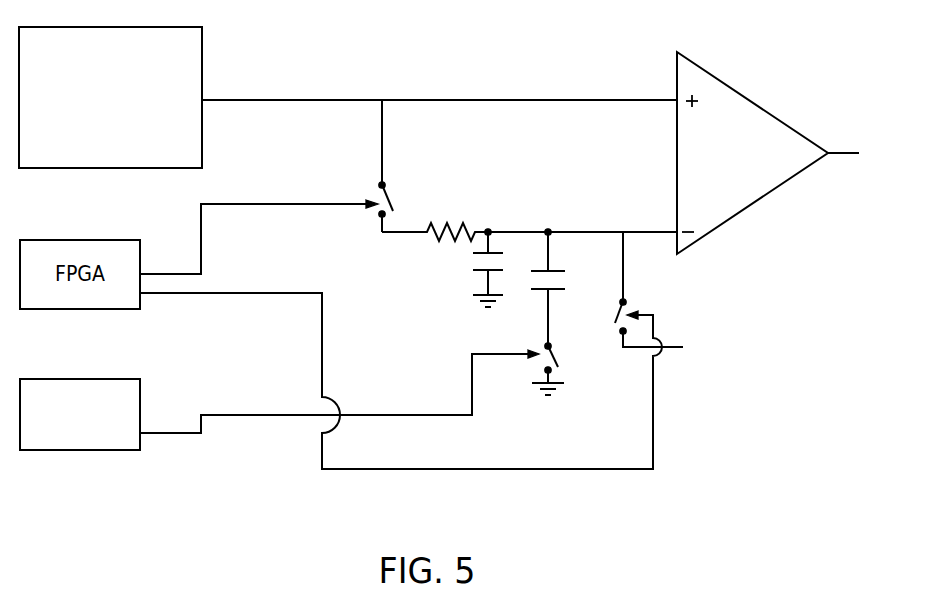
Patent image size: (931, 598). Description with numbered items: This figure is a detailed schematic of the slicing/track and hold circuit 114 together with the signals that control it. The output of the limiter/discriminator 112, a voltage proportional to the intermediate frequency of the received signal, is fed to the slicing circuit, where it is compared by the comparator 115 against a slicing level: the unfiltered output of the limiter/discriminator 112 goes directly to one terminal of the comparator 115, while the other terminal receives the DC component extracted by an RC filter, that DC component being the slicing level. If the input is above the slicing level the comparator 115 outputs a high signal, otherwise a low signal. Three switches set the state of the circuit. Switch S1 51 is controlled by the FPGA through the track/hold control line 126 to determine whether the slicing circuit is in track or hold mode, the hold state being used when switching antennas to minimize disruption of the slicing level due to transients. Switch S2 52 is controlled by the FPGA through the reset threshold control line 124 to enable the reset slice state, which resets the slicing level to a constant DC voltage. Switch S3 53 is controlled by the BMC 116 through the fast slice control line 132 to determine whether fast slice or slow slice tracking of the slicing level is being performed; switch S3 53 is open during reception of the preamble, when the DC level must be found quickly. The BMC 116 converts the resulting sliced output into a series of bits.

The limiter/discriminator 112 is at (92, 144).
The slicing/track and hold circuit 114 is at (455, 100).
The comparator 115 is at (723, 166).
The BMC (burst mode controller) 116 is at (62, 445).
The reset threshold control line 124 is at (215, 291).
The track/hold control line 126 is at (200, 262).
The fast slice control line 132 is at (230, 417).
The switch S1 51 is at (528, 223).
The switch S2 52 is at (698, 312).
The switch S3 53 is at (556, 368).